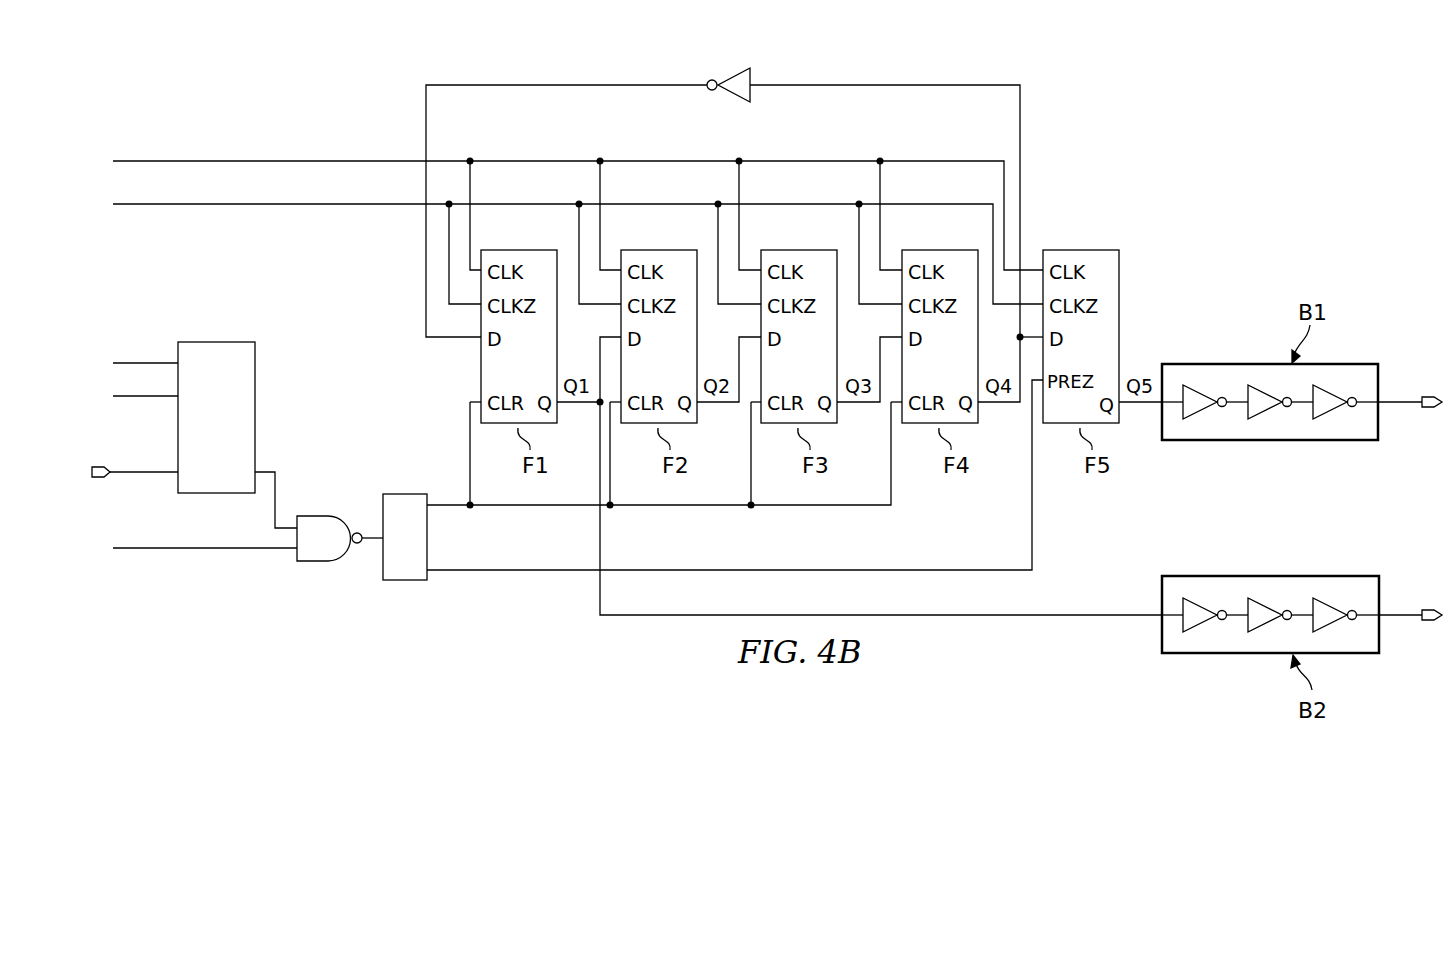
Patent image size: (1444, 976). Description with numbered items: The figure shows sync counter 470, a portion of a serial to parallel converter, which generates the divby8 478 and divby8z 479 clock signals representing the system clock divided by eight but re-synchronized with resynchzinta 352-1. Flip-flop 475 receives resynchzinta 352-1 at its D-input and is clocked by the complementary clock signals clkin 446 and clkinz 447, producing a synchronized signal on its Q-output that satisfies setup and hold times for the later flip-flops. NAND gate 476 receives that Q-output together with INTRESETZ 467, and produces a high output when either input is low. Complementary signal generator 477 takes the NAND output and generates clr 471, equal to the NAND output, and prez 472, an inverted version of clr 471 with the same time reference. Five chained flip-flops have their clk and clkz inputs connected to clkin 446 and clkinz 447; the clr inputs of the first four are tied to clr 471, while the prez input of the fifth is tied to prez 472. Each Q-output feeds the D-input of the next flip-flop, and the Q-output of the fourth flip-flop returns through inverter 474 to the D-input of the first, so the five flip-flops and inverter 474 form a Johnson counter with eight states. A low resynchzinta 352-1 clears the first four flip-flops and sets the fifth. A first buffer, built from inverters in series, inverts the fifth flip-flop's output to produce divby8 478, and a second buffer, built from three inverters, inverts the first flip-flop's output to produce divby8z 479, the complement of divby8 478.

The clkin 446 is at (135, 161).
The clkinz 447 is at (124, 205).
The resynchzinta 352-1 is at (146, 473).
The INTRESETZ 467 is at (150, 549).
The sync counter 470 is at (1210, 226).
The clr 471 is at (448, 505).
The prez 472 is at (520, 571).
The inverter 474 is at (730, 68).
The flip-flop 475 is at (208, 342).
The NAND gate 476 is at (318, 562).
The complementary signal generator 477 is at (403, 581).
The divby8 478 is at (1400, 401).
The divby8z 479 is at (1400, 618).